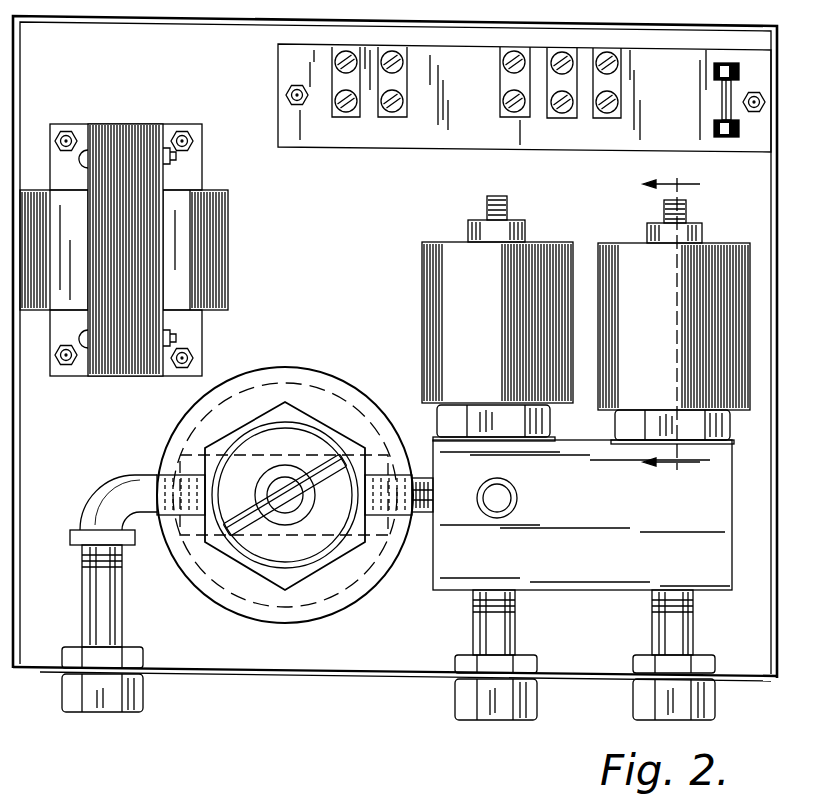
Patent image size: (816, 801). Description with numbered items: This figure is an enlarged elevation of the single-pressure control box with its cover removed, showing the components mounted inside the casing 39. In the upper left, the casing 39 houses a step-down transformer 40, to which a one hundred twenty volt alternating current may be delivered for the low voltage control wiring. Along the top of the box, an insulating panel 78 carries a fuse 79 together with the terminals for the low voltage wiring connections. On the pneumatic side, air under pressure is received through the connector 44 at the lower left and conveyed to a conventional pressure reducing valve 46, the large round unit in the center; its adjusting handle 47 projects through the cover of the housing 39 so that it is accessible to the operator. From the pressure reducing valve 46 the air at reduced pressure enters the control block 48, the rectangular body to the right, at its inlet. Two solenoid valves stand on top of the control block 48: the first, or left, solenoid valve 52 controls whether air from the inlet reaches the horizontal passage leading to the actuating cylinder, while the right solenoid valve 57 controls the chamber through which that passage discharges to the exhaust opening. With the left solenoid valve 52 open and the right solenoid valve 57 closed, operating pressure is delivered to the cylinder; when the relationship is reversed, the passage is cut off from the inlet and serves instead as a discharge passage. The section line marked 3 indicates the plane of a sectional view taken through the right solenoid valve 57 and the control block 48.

The casing 39 is at (219, 25).
The step-down transformer 40 is at (128, 124).
The connector 44 is at (88, 589).
The pressure reducing valve 46 is at (289, 408).
The adjusting handle 47 is at (336, 452).
The control block 48 is at (598, 591).
The first solenoid valve 52 is at (432, 262).
The right solenoid valve 57 is at (728, 252).
The insulating panel 78 is at (613, 143).
The fuse 79 is at (727, 91).
The section line 3- 3 is at (671, 327).